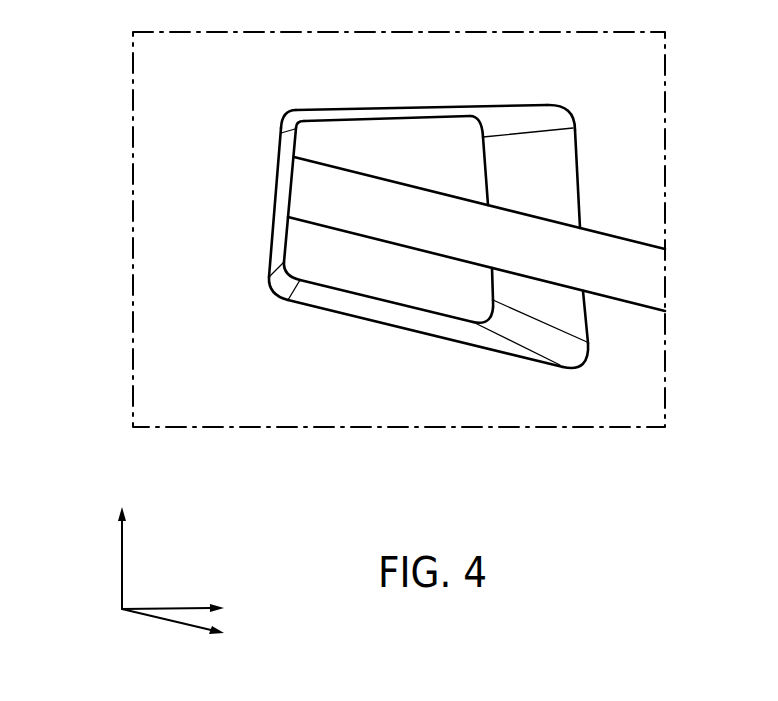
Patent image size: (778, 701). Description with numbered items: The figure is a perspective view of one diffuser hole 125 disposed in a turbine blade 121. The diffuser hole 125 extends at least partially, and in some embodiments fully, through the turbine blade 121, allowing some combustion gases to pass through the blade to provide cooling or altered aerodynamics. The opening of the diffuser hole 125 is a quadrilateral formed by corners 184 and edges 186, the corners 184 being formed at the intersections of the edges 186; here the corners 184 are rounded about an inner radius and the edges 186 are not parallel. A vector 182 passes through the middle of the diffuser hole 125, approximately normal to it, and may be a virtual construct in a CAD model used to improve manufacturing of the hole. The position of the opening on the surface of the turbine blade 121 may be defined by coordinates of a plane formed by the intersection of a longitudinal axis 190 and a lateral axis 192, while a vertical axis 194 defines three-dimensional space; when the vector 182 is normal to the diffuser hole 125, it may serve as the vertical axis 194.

The turbine blade 121 is at (282, 395).
The diffuser hole 125 is at (473, 452).
The vector 182 is at (644, 268).
The corners 184 is at (286, 116).
The edges 186 is at (422, 107).
The longitudinal axis 190 is at (122, 563).
The lateral axis 192 is at (168, 608).
The vertical axis 194 is at (165, 621).